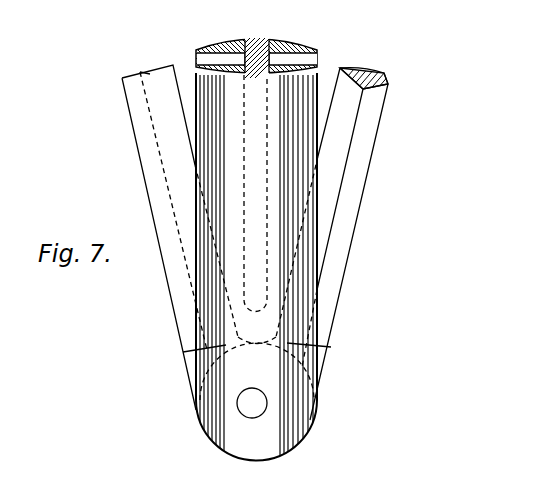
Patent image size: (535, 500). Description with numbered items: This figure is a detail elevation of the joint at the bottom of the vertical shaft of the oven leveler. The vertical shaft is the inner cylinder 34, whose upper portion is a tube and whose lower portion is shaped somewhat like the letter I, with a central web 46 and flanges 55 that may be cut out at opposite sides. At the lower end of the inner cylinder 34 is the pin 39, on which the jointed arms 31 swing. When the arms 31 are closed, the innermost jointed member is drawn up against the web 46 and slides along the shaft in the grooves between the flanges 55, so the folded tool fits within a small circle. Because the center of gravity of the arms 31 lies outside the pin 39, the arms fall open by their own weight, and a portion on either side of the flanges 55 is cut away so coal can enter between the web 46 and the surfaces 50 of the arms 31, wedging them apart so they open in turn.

The arms 31 is at (143, 172).
The inner cylinder 34 is at (252, 252).
The pin 39 is at (252, 403).
The web 46 is at (236, 41).
The surfaces 50 is at (150, 72).
The flanges 55 is at (207, 56).